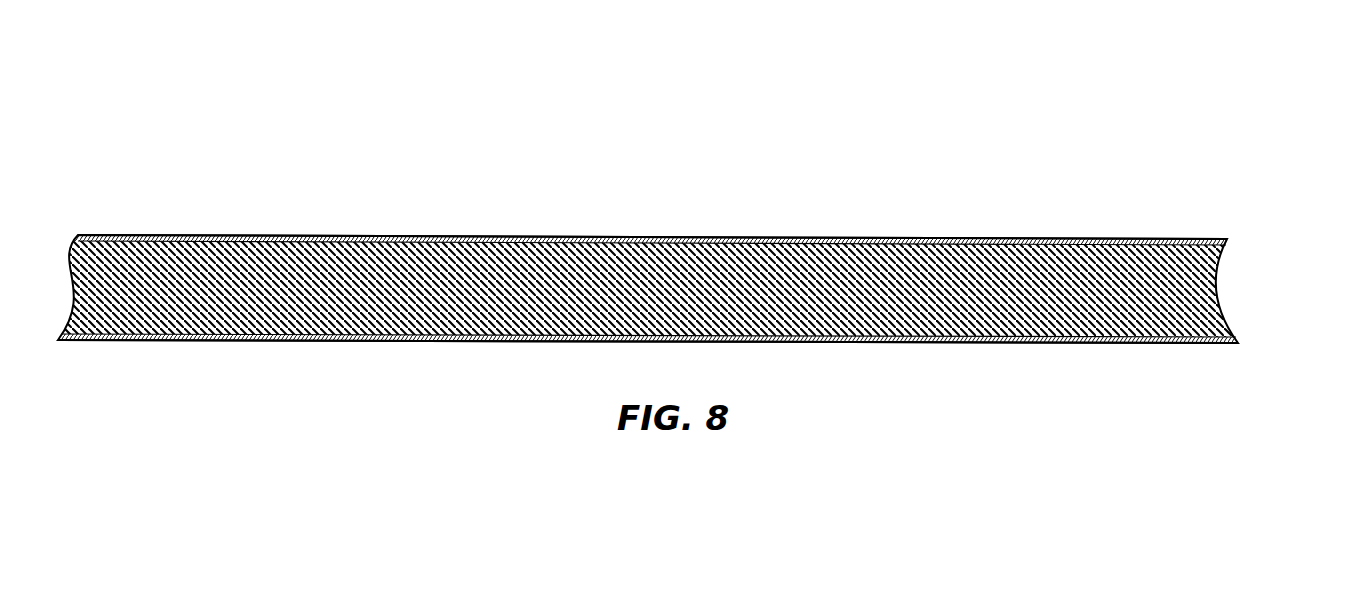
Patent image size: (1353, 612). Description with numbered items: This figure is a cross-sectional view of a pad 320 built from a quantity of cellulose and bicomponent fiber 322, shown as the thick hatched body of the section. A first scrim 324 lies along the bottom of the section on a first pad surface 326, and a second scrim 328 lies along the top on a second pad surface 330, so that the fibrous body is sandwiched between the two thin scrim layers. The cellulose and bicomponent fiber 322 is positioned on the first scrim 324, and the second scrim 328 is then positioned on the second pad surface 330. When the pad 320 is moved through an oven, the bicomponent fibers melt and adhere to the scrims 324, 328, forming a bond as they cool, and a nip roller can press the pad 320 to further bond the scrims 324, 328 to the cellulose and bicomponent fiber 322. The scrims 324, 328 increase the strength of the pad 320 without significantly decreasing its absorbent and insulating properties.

The pad 320 is at (1077, 107).
The cellulose and bicomponent fiber 322 is at (1195, 293).
The first scrim 324 is at (1102, 342).
The first pad surface 326 is at (1210, 342).
The second scrim 328 is at (1060, 240).
The second pad surface 330 is at (1203, 240).